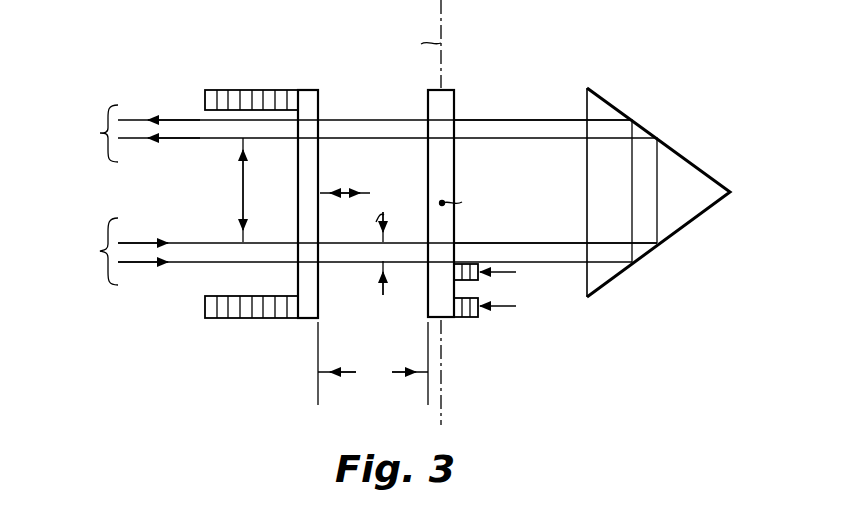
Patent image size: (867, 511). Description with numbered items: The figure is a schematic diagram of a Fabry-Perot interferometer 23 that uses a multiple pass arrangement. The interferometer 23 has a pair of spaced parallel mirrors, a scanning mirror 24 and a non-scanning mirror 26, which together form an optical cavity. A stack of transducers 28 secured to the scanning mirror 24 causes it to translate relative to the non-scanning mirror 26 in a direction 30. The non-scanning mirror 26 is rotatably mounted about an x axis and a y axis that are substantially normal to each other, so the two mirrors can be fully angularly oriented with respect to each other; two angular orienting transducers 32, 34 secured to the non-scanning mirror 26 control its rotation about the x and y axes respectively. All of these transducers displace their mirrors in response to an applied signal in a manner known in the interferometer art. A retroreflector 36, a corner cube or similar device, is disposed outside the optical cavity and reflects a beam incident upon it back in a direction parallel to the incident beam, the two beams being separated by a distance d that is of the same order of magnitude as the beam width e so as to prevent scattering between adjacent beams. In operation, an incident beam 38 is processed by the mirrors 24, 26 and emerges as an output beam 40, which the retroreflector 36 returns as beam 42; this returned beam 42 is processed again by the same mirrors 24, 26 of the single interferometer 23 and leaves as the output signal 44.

The Fabry-Perot interferometer 23 is at (500, 104).
The scanning mirror 24 is at (318, 84).
The non-scanning mirror 26 is at (452, 92).
The stack of transducers 28 is at (254, 92).
The direction of translation 30 is at (342, 194).
The angular orienting transducer 32 is at (476, 318).
The angular orienting transducer 34 is at (480, 280).
The retroreflector 36 is at (674, 142).
The incident beam 38 is at (359, 251).
The output beam 40 is at (515, 241).
The returned beam 42 is at (532, 118).
The output signal 44 is at (352, 183).